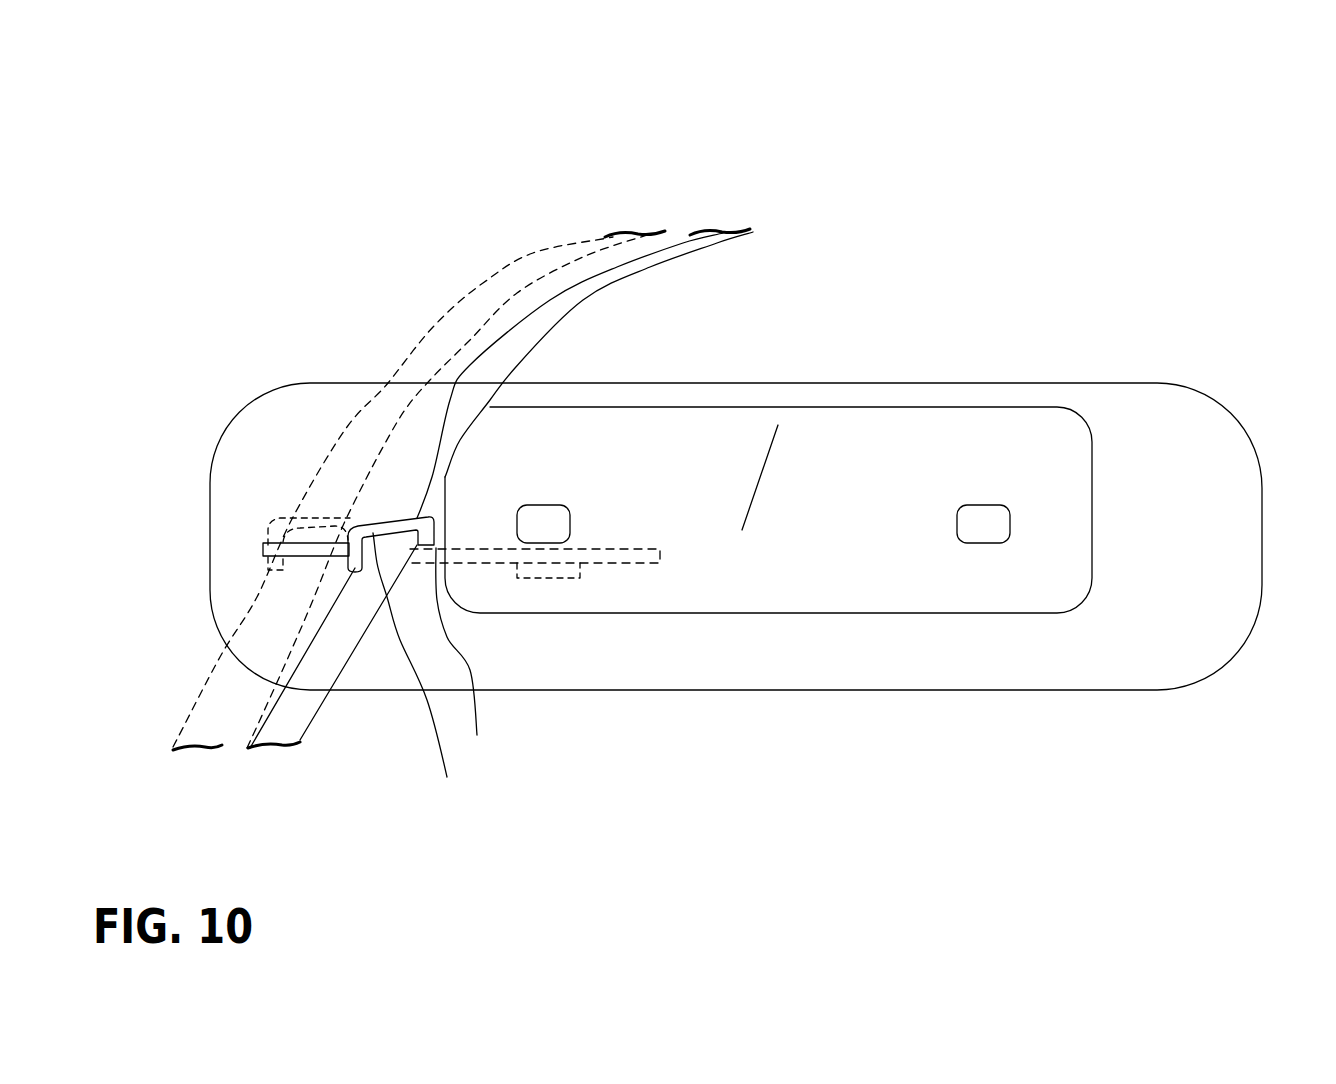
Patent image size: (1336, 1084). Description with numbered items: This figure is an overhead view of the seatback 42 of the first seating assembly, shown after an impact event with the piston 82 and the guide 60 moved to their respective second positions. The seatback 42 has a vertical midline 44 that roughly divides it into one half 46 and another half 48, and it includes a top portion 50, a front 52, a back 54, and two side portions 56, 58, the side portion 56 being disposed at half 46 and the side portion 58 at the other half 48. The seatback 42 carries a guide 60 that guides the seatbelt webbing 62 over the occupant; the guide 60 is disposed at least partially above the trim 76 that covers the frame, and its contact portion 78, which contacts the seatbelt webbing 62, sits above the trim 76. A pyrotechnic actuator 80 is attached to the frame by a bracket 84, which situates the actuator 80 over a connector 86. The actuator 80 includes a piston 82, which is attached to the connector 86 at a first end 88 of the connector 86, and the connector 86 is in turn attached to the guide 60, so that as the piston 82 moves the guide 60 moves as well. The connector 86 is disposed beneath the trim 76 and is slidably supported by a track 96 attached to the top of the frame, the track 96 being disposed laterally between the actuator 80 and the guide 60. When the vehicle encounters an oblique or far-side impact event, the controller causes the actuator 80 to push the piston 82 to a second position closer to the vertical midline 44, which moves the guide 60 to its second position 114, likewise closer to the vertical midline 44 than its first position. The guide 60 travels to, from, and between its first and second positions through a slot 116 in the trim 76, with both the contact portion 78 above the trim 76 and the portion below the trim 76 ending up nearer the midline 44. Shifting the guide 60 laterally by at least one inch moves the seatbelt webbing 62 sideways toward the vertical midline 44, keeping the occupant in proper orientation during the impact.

The seatback 42 is at (210, 173).
The vertical midline 44 is at (757, 487).
The one half 46 is at (227, 607).
The another half 48 is at (1223, 630).
The top portion 50 is at (1133, 533).
The front 52 is at (911, 383).
The back 54 is at (990, 693).
The side portion 56 is at (210, 515).
The side portion 58 is at (1263, 528).
The guide 60 is at (392, 535).
The seatbelt webbing 62 is at (570, 307).
The trim 76 is at (1198, 430).
The contact portion 78 is at (420, 669).
The actuator 80 is at (570, 563).
The piston 82 is at (627, 565).
The bracket 84 is at (540, 565).
The connector 86 is at (463, 550).
The first end 88 is at (660, 549).
The track 96 is at (465, 656).
The second position 114 is at (407, 507).
The slot 116 is at (320, 535).